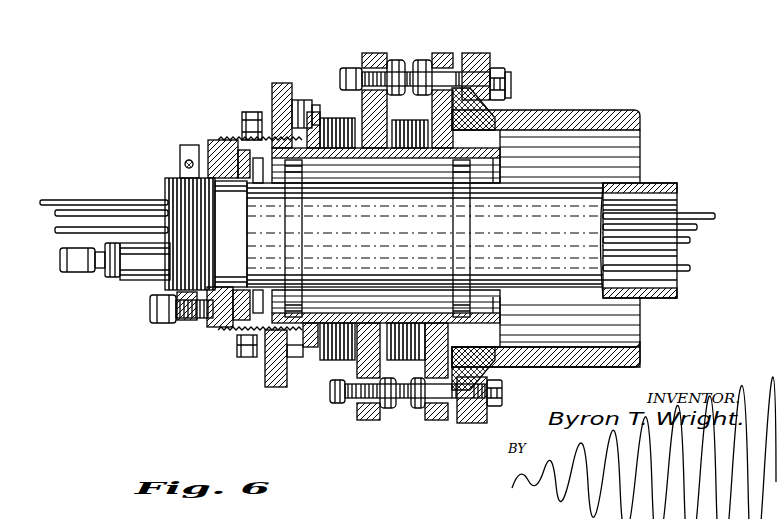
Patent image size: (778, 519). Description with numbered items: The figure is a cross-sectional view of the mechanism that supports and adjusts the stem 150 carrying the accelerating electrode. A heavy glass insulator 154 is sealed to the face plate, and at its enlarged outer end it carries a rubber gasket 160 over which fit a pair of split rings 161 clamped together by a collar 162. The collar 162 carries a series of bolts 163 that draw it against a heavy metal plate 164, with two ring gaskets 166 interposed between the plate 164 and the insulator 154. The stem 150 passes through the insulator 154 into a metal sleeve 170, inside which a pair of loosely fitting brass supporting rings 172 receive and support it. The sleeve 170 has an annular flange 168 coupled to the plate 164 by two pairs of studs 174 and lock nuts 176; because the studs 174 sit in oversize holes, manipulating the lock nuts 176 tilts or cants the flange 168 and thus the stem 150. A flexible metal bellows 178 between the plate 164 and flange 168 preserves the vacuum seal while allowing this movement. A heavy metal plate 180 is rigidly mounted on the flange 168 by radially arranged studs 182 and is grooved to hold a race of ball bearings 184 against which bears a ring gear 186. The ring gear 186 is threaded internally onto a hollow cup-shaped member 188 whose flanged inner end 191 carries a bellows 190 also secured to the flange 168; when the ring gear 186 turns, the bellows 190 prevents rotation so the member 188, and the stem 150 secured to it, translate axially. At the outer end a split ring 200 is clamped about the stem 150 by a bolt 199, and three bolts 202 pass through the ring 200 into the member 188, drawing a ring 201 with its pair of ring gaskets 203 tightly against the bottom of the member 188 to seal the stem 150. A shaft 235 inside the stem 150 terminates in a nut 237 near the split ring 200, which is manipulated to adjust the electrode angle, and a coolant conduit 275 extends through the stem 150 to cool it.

The stem 150 is at (167, 190).
The glass insulator 154 is at (607, 110).
The rubber gasket 160 is at (490, 107).
The split rings 161 is at (508, 84).
The collar 162 is at (478, 53).
The bolts 163 is at (495, 70).
The metal plate 164 is at (470, 42).
The ring gaskets 166 is at (452, 352).
The annular flange 168 is at (375, 53).
The metal sleeve 170 is at (496, 327).
The brass supporting rings 172 is at (302, 305).
The studs 174 is at (345, 68).
The lock nuts 176 is at (405, 75).
The metal bellows 178 is at (430, 118).
The metal plate 180 is at (280, 385).
The studs 182 is at (315, 113).
The ball bearings 184 is at (272, 85).
The ring gear 186 is at (245, 110).
The cup-shaped member 188 is at (200, 320).
The bellows 190 is at (300, 100).
The flanged inner end 191 is at (312, 105).
The bolt 199 is at (189, 160).
The split ring 200 is at (180, 152).
The ring or flange 201 is at (223, 325).
The bolts 202 is at (177, 315).
The ring gaskets 203 is at (232, 165).
The shaft 235 is at (688, 272).
The nut 237 is at (82, 274).
The conduit 275 is at (63, 213).